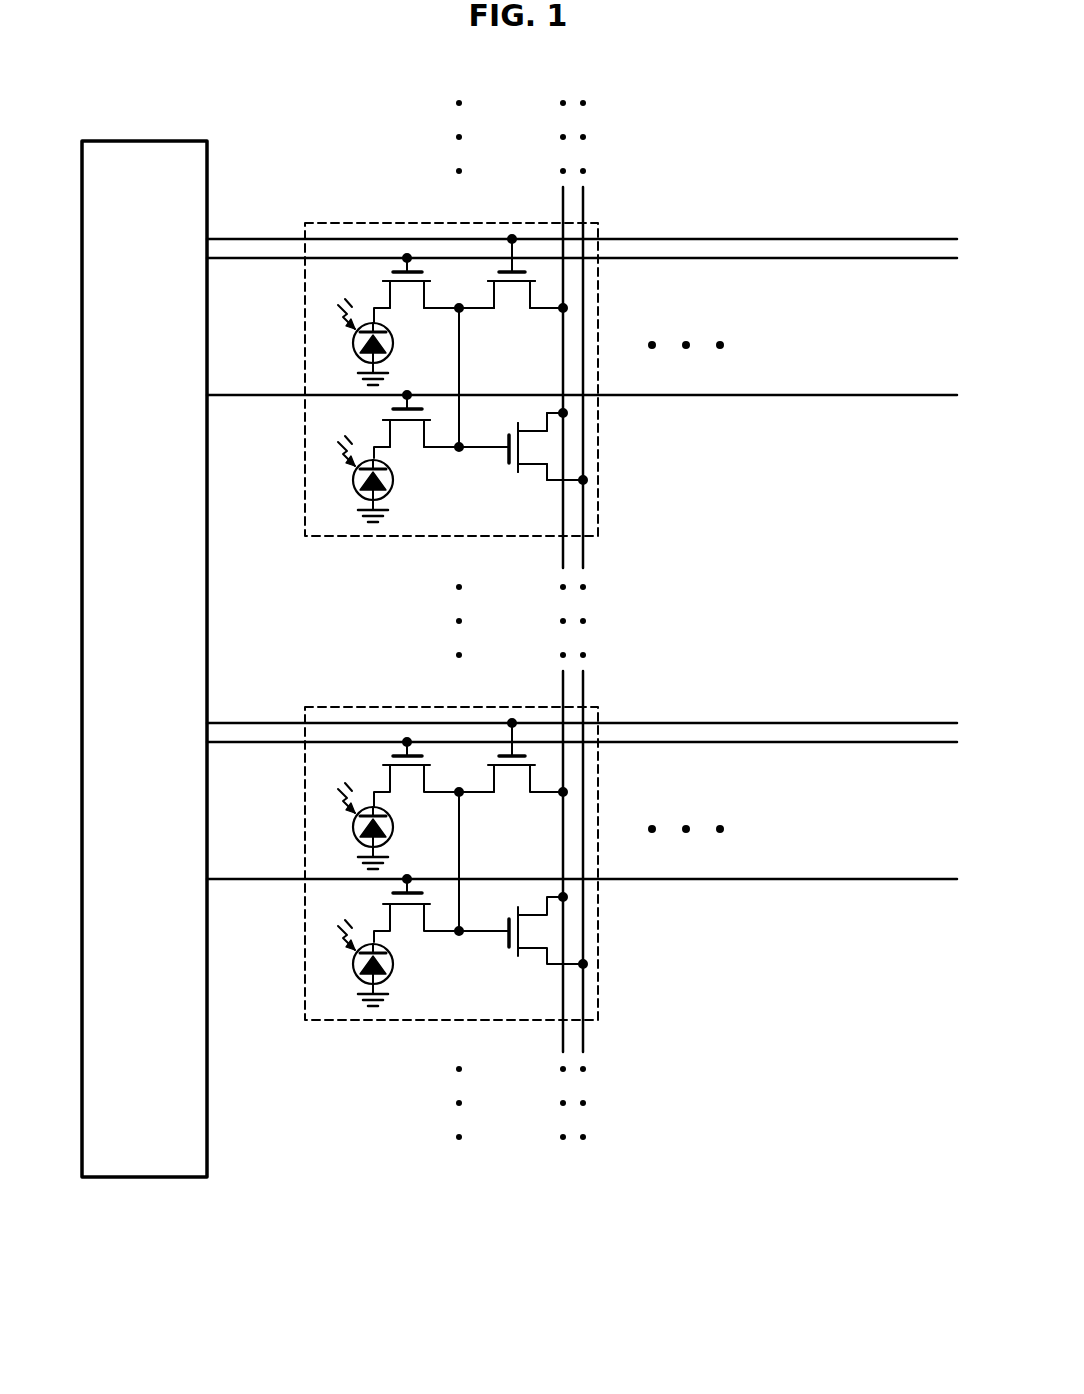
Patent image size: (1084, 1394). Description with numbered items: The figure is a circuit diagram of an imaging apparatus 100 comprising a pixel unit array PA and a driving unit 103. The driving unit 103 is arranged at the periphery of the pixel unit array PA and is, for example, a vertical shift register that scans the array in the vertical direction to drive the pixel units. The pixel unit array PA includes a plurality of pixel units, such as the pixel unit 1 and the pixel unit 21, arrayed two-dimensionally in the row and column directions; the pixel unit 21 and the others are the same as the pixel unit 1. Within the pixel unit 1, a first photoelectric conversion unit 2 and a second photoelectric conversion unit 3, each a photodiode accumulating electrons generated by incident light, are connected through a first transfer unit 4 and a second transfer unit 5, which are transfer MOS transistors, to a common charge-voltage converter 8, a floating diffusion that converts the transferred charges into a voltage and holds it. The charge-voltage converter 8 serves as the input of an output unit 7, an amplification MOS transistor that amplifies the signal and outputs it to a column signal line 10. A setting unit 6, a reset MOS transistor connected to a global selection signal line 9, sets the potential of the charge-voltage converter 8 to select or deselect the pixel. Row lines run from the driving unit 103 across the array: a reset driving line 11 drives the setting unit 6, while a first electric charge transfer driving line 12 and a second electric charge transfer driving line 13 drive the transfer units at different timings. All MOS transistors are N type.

The pixel unit 1 is at (350, 222).
The first photoelectric conversion unit 2 is at (352, 343).
The second photoelectric conversion unit 3 is at (352, 480).
The first transfer unit 4 is at (408, 297).
The second transfer unit 5 is at (408, 434).
The setting unit 6 is at (513, 297).
The output unit 7 is at (533, 472).
The charge-voltage converter 8 is at (460, 458).
The global selection signal line 9 is at (563, 196).
The column signal line 10 is at (583, 196).
The reset driving line 11 is at (802, 238).
The first electric charge transfer driving line 12 is at (903, 257).
The second electric charge transfer driving line 13 is at (903, 394).
The pixel unit 21 is at (350, 706).
The imaging apparatus 100 is at (580, 1270).
The driving unit 103 is at (143, 1165).
The pixel unit array PA is at (330, 1160).